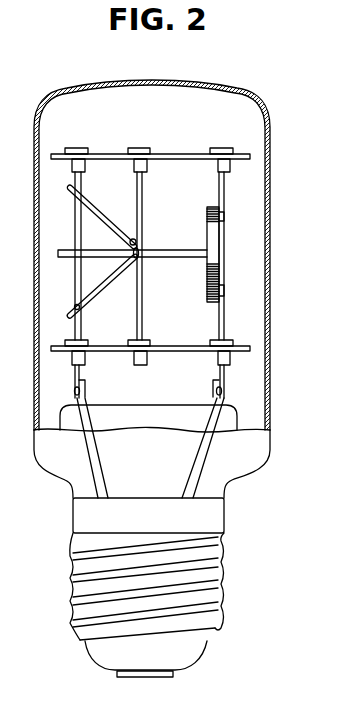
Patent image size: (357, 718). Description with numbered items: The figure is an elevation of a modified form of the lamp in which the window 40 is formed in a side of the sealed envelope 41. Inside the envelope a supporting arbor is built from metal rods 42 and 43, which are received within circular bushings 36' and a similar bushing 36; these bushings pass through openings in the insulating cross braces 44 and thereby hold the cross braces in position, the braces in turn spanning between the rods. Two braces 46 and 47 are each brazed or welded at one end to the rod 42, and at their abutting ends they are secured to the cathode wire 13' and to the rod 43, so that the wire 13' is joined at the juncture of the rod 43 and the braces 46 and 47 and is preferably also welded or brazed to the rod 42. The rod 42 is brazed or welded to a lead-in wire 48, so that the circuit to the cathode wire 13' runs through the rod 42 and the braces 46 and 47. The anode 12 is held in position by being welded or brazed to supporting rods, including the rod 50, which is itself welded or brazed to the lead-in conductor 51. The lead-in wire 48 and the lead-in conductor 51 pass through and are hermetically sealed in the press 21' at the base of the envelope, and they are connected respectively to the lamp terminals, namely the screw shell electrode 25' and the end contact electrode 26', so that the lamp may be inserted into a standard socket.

The window 40 is at (268, 281).
The envelope 41 is at (268, 113).
The metal rod 42 is at (75, 226).
The metal rod 43 is at (137, 188).
The insulating cross braces 44 is at (112, 144).
The circular bushing 36 is at (156, 332).
The circular bushings 36' is at (180, 137).
The brace 46 is at (99, 224).
The brace 47 is at (108, 287).
The anode 12 is at (210, 234).
The cathode wire 13' is at (132, 262).
The rod 50 is at (226, 333).
The lead-in wire 48 is at (103, 462).
The lead-in conductor 51 is at (193, 463).
The press 21' is at (118, 417).
The electrode terminal 25' is at (167, 569).
The electrode terminal 26' is at (146, 671).